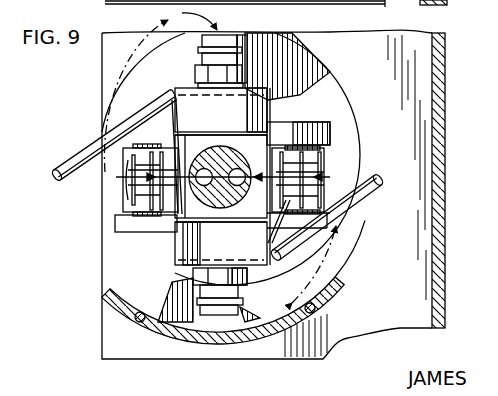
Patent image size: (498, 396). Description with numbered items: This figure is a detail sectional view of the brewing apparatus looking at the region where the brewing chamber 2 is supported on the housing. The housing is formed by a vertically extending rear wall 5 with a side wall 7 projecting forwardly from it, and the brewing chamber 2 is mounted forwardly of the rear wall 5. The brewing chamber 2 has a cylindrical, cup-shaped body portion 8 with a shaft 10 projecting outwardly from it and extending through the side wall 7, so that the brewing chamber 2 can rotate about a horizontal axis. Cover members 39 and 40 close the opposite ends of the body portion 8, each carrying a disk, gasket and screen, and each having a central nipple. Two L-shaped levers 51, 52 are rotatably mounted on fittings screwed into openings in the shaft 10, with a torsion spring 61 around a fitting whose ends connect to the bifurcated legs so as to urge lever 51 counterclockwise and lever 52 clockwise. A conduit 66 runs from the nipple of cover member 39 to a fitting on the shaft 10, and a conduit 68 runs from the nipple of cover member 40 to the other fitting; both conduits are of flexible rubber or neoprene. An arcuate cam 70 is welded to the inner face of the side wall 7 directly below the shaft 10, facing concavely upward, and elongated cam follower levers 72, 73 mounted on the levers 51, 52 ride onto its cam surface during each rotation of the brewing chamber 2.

The brewing chamber 2 is at (327, 123).
The rear wall 5 is at (400, 42).
The side wall 7 is at (440, 90).
The body portion 8 is at (323, 157).
The shaft 10 is at (200, 208).
The cover member 39 is at (333, 130).
The cover member 40 is at (336, 238).
The L-shaped lever 51 is at (313, 120).
The L-shaped lever 52 is at (175, 263).
The torsion spring 61 is at (122, 203).
The conduit 66 is at (232, 34).
The conduit 68 is at (213, 308).
The cam 70 is at (198, 342).
The cam follower lever 72 is at (386, 182).
The cam follower lever 73 is at (56, 170).